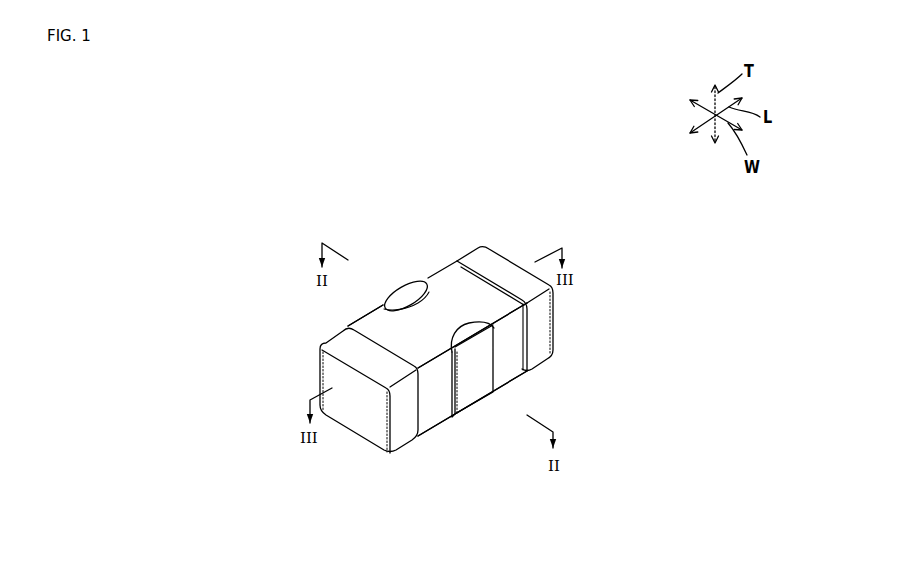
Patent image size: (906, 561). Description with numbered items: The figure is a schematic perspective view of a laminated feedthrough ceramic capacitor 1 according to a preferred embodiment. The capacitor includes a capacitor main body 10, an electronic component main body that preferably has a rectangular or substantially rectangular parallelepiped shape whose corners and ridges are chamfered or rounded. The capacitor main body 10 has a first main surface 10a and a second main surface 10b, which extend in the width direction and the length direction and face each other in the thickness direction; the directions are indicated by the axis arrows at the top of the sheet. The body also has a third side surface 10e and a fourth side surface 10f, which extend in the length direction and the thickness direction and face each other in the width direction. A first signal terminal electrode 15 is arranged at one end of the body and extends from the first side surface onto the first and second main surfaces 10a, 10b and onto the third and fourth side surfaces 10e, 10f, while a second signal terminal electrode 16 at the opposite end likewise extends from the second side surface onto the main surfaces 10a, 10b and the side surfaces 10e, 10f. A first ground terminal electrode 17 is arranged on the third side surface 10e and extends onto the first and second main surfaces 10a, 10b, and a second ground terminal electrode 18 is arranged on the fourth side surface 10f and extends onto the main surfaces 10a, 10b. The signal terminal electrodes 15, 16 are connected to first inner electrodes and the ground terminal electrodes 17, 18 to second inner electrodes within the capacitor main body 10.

The laminated feedthrough ceramic capacitor 1 is at (503, 224).
The capacitor main body 10 is at (423, 367).
The first main surface 10a is at (442, 291).
The second main surface 10b is at (432, 432).
The third side surface 10e is at (372, 313).
The fourth side surface 10f is at (438, 410).
The first signal terminal electrode 15 is at (366, 442).
The second signal terminal electrode 16 is at (557, 350).
The first ground terminal electrode 17 is at (412, 297).
The second ground terminal electrode 18 is at (482, 412).